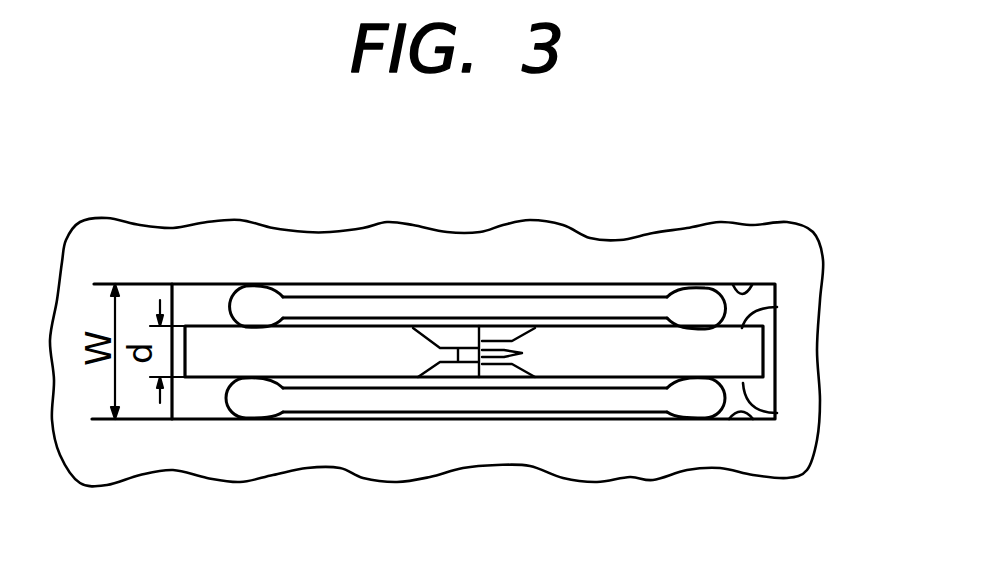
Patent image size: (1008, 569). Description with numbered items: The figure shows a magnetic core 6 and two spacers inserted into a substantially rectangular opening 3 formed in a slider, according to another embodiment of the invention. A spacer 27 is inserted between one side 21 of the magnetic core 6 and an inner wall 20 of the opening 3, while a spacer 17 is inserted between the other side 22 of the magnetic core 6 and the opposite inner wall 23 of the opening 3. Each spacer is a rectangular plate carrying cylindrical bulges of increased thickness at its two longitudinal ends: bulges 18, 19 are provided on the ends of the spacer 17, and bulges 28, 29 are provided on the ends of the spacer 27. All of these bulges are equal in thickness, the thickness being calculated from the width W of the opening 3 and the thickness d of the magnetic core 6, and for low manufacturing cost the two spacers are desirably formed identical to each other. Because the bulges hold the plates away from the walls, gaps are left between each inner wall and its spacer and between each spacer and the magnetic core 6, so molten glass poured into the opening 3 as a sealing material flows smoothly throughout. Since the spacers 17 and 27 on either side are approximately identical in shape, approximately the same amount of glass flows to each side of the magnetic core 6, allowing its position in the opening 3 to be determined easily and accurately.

The opening 3 is at (198, 307).
The magnetic core 6 is at (493, 328).
The spacer 17 is at (447, 400).
The bulge 18 is at (262, 405).
The bulge 19 is at (688, 403).
The inner wall 20 is at (757, 288).
The side 21 is at (777, 307).
The side 22 is at (777, 413).
The inner wall 23 is at (757, 425).
The spacer 27 is at (397, 305).
The bulge 28 is at (258, 303).
The bulge 29 is at (690, 310).